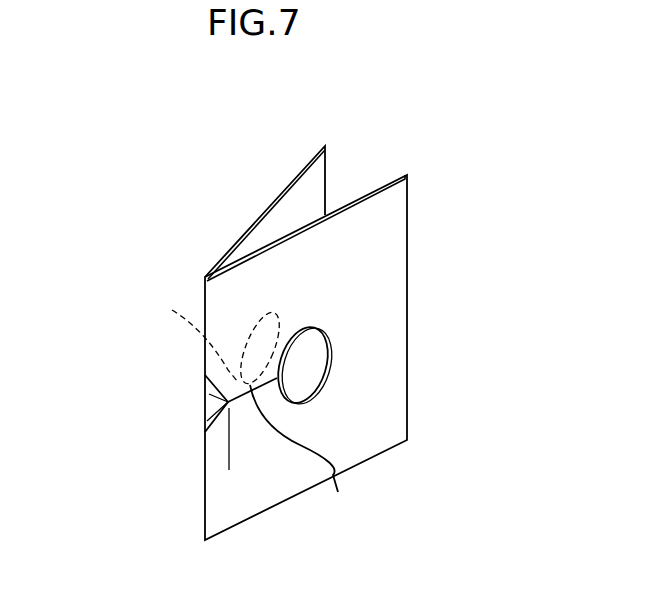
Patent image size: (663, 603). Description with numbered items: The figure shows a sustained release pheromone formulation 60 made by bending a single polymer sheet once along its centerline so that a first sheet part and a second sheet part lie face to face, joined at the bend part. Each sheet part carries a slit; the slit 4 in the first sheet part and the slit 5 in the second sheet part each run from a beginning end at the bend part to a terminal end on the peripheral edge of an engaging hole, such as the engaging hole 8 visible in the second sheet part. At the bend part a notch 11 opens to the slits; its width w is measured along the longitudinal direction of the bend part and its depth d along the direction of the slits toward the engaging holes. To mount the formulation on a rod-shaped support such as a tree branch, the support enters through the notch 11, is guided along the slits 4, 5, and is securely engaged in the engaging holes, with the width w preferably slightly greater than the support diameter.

The sustained release pheromone formulation 60 is at (214, 182).
The slit 4 is at (227, 333).
The notch 11 is at (202, 375).
The engaging hole 8 is at (330, 370).
The slit 5 is at (289, 452).
The width of the notch w is at (188, 378).
The depth of the notch d is at (260, 442).